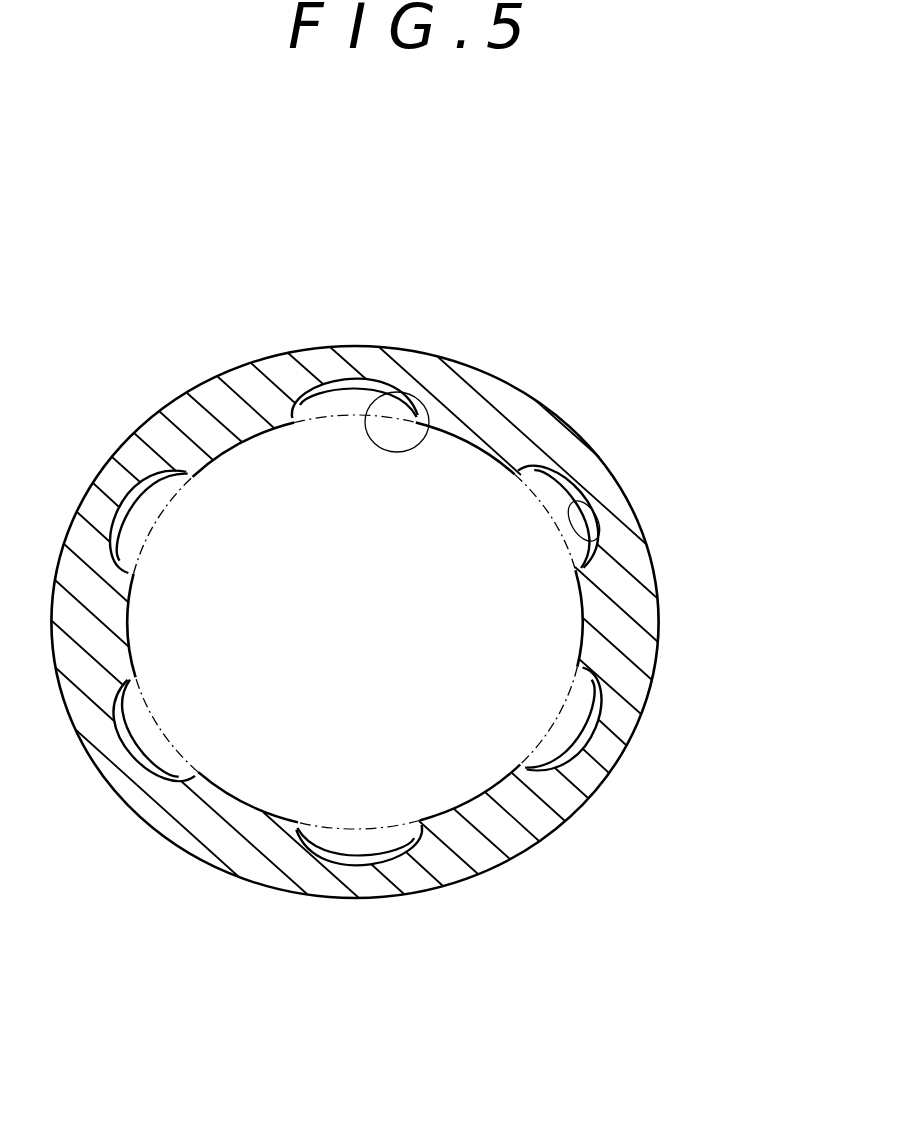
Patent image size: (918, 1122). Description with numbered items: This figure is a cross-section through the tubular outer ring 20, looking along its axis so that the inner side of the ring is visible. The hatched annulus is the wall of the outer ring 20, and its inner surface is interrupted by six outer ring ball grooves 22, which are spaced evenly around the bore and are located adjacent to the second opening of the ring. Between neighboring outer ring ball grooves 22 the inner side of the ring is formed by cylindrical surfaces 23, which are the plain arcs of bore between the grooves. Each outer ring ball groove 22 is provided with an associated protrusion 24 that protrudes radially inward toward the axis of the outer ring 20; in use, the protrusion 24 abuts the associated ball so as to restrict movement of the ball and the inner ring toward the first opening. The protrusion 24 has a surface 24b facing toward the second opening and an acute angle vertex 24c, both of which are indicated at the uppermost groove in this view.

The outer ring 20 is at (562, 393).
The outer ring ball groove 22 is at (592, 528).
The cylindrical surface 23 is at (586, 656).
The protrusion 24 is at (372, 380).
The surface facing toward the second opening 24b is at (330, 378).
The acute angle vertex 24c is at (427, 404).